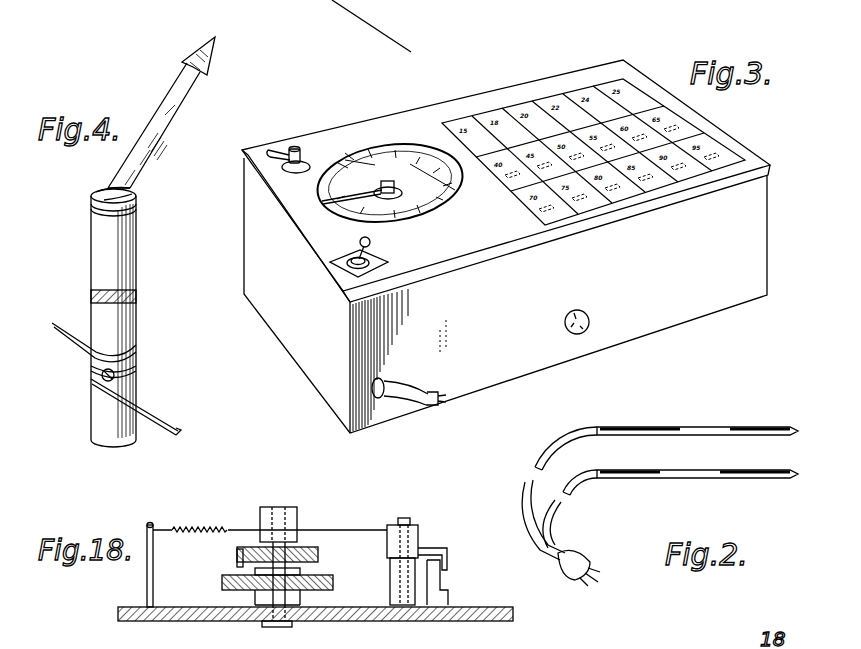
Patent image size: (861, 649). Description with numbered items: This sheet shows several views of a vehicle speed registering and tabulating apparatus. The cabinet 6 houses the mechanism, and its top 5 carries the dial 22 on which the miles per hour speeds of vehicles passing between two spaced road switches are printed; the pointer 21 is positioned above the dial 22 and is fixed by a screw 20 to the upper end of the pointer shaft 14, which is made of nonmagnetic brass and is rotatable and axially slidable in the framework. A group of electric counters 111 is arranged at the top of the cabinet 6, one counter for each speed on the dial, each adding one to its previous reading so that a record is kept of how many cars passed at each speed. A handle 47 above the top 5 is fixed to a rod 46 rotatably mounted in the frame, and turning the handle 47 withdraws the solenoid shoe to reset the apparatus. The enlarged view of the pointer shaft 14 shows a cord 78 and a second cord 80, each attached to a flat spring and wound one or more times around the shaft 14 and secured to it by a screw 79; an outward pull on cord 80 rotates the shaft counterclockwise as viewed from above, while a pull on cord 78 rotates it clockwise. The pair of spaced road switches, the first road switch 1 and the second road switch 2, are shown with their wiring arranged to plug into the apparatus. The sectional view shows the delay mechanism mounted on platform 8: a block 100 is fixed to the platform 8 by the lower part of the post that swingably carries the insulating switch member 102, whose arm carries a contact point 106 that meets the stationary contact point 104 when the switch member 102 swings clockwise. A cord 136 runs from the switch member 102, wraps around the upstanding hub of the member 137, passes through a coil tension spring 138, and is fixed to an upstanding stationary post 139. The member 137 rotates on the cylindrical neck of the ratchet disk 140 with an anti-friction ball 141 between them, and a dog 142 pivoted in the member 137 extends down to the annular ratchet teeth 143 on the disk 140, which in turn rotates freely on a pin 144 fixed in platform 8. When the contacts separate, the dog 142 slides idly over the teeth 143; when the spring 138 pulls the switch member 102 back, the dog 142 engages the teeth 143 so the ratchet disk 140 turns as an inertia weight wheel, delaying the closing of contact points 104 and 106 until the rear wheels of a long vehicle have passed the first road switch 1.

In FIG. 2, the first road switch 1 is at (718, 426).
In FIG. 2, the road switch 2 is at (753, 478).
In FIG. 3, the top 5 is at (360, 126).
In FIG. 3, the cabinet 6 is at (718, 286).
In FIG. 18, the platform 8 is at (147, 623).
In FIG. 3, the pointer shaft 14 is at (398, 186).
In FIG. 4, the pointer shaft 14 is at (118, 250).
In FIG. 4, the screw 20 is at (98, 191).
In FIG. 3, the pointer 21 is at (356, 186).
In FIG. 4, the pointer 21 is at (170, 97).
In FIG. 3, the dial 22 is at (447, 209).
In FIG. 3, the rod 46 is at (290, 168).
In FIG. 3, the handle 47 is at (277, 152).
In FIG. 4, the cord 78 is at (68, 322).
In FIG. 4, the screw 79 is at (137, 368).
In FIG. 4, the cord 80 is at (160, 420).
In FIG. 18, the block 100 is at (386, 614).
In FIG. 18, the switch member 102 is at (418, 530).
In FIG. 18, the stationary contact point 104 is at (437, 574).
In FIG. 18, the contact point 106 is at (450, 557).
In FIG. 3, the counters 111 is at (537, 113).
In FIG. 18, the cord 136 is at (333, 533).
In FIG. 18, the member 137 is at (328, 556).
In FIG. 18, the coil tension spring 138 is at (202, 524).
In FIG. 18, the post 139 is at (145, 584).
In FIG. 18, the ratchet disk 140 is at (315, 592).
In FIG. 18, the anti-friction ball 141 is at (287, 506).
In FIG. 18, the dog 142 is at (235, 562).
In FIG. 18, the ratchet teeth 143 is at (292, 578).
In FIG. 18, the pin 144 is at (240, 590).